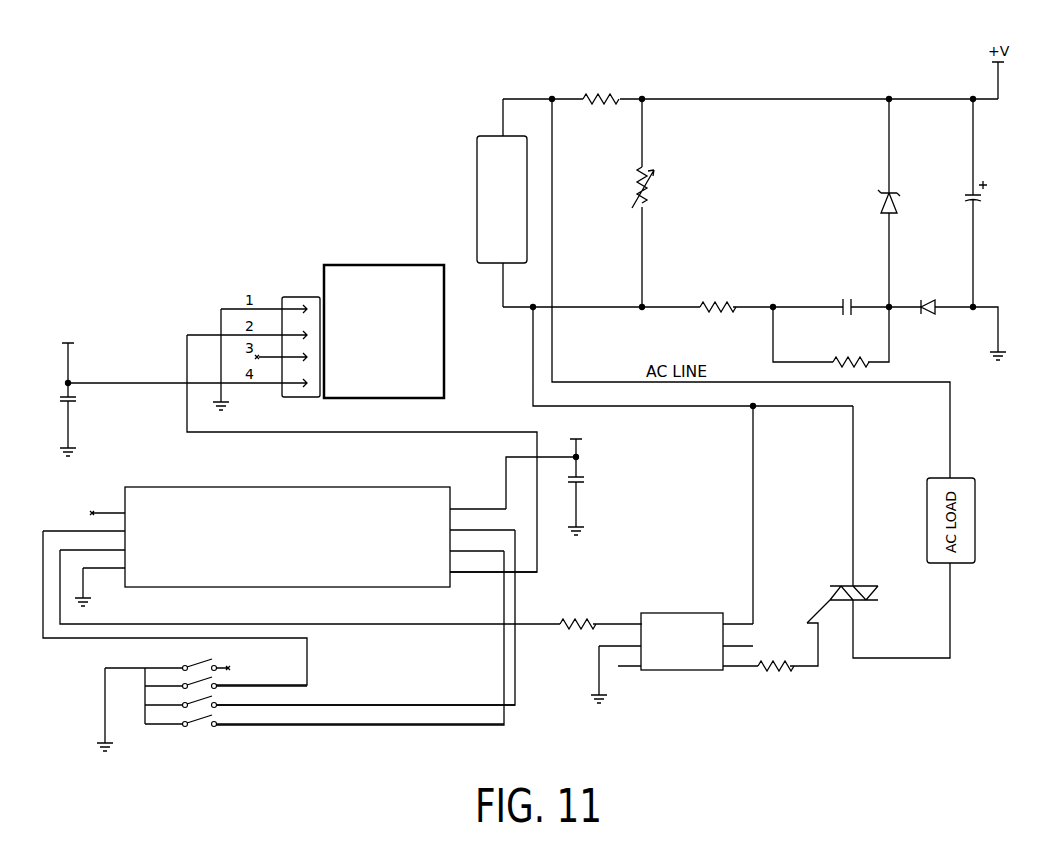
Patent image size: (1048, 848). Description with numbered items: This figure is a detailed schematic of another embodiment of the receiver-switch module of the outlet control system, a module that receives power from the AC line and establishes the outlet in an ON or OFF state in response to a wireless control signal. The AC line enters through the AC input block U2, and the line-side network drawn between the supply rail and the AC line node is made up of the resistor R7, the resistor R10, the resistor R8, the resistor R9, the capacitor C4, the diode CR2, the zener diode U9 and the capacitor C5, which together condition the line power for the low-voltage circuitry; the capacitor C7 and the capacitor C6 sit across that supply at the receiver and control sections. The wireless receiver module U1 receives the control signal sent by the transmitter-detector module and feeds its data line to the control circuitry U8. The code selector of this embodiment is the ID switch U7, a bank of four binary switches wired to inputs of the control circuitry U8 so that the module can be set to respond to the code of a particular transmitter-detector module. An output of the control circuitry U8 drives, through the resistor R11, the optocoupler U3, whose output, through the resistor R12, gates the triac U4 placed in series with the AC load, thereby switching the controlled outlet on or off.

The RX module U1 is at (384, 321).
The AC input U2 is at (489, 203).
The optocoupler U3 is at (674, 647).
The triac U4 is at (842, 595).
The ID switch U7 is at (306, 711).
The controller U8 is at (290, 527).
The zener diode U9 is at (886, 203).
The resistor R7 is at (589, 93).
The resistor R8 is at (703, 300).
The resistor R9 is at (831, 337).
The varistor R10 is at (639, 203).
The resistor R11 is at (584, 617).
The resistor R12 is at (788, 647).
The capacitor C4 is at (844, 296).
The capacitor C5 is at (985, 203).
The capacitor C6 is at (567, 478).
The capacitor C7 is at (58, 390).
The diode CR2 is at (939, 320).